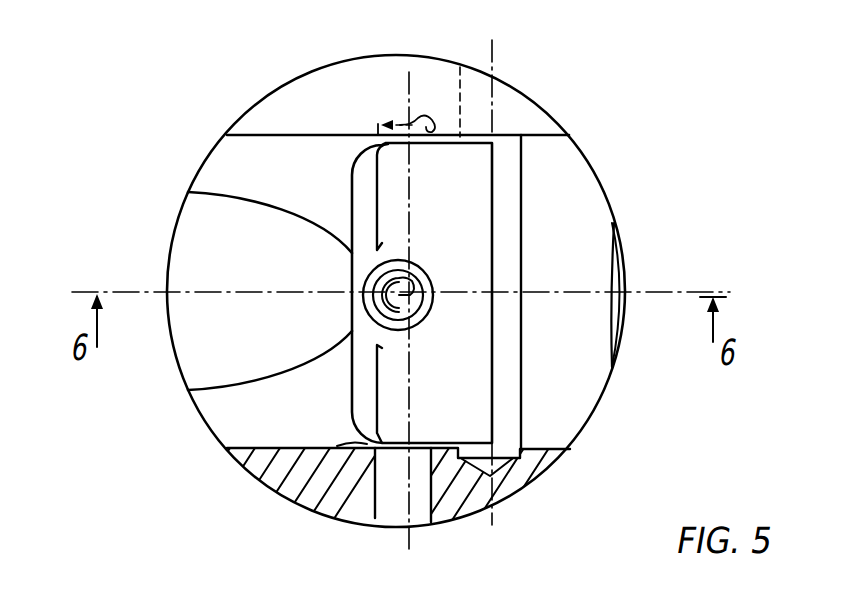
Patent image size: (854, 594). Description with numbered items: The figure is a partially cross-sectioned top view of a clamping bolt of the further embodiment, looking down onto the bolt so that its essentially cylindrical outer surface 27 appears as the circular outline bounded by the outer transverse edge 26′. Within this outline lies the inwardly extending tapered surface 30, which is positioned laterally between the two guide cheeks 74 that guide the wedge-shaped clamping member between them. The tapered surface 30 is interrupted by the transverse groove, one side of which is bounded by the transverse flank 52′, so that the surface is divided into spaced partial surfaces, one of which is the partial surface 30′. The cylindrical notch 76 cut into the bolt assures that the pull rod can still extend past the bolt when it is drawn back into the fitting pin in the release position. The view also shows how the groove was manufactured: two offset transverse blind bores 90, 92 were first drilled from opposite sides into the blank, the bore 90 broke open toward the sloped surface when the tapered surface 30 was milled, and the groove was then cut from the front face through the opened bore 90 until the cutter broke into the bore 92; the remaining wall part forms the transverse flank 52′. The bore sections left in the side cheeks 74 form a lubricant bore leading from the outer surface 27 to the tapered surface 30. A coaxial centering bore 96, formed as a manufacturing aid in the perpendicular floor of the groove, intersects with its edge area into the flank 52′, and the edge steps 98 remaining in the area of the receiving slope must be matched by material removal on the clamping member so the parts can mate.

The outer transverse edge 26′ is at (167, 270).
The outer surface 27 is at (606, 195).
The tapered surface 30 is at (560, 187).
The partial surface 30′ is at (240, 412).
The transverse flank 52′ is at (365, 177).
The guide cheeks 74 is at (323, 88).
The cylindrical notch 76 is at (232, 228).
The transverse blind bore 90 is at (525, 120).
The transverse blind bore 92 is at (374, 508).
The centering bore 96 is at (399, 275).
The edge steps 98 is at (362, 148).